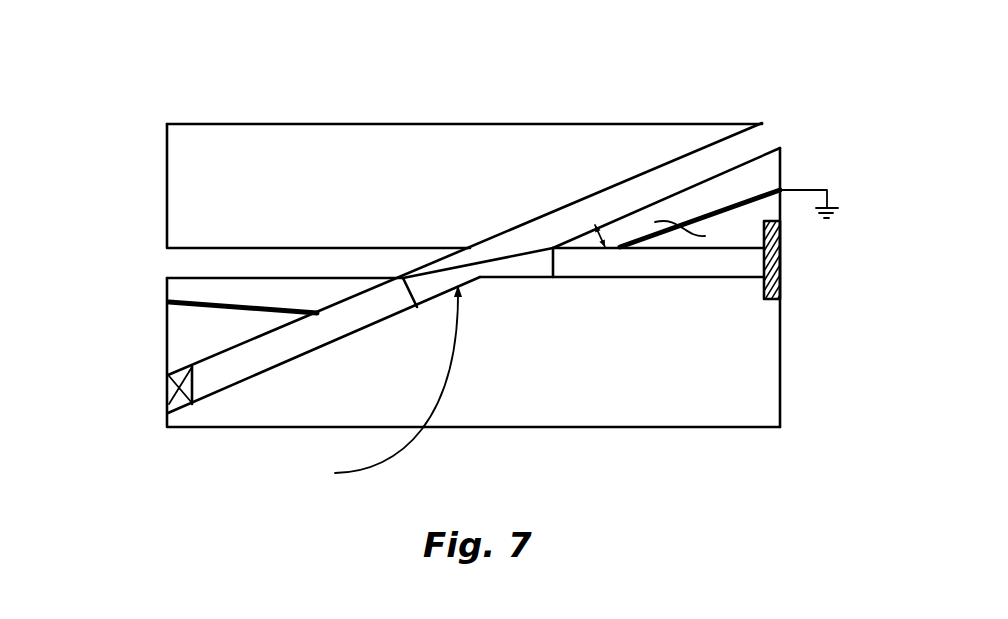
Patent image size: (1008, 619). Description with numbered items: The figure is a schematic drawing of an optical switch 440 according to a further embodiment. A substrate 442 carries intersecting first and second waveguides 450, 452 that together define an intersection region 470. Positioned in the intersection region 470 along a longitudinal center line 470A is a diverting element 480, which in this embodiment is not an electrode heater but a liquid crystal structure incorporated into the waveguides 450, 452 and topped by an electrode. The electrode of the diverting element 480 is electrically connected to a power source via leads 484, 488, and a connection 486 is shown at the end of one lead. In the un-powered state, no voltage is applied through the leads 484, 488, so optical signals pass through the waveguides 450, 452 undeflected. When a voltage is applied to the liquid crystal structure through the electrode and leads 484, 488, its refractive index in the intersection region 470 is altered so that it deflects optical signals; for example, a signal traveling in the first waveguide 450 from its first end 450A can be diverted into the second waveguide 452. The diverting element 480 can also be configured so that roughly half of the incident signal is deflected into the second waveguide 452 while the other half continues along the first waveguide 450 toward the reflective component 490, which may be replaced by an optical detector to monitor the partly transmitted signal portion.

The optical switch 440 is at (115, 142).
The substrate 442 is at (374, 197).
The first waveguide 450 is at (288, 247).
The first end 450A is at (177, 267).
The second waveguide 452 is at (645, 170).
The intersection region 470 is at (397, 268).
The longitudinal center line 470A is at (545, 248).
The diverting element 480 is at (379, 387).
The lead 484 is at (193, 309).
The ground connection 486 is at (829, 199).
The lead 488 is at (716, 212).
The reflective component 490 is at (783, 238).